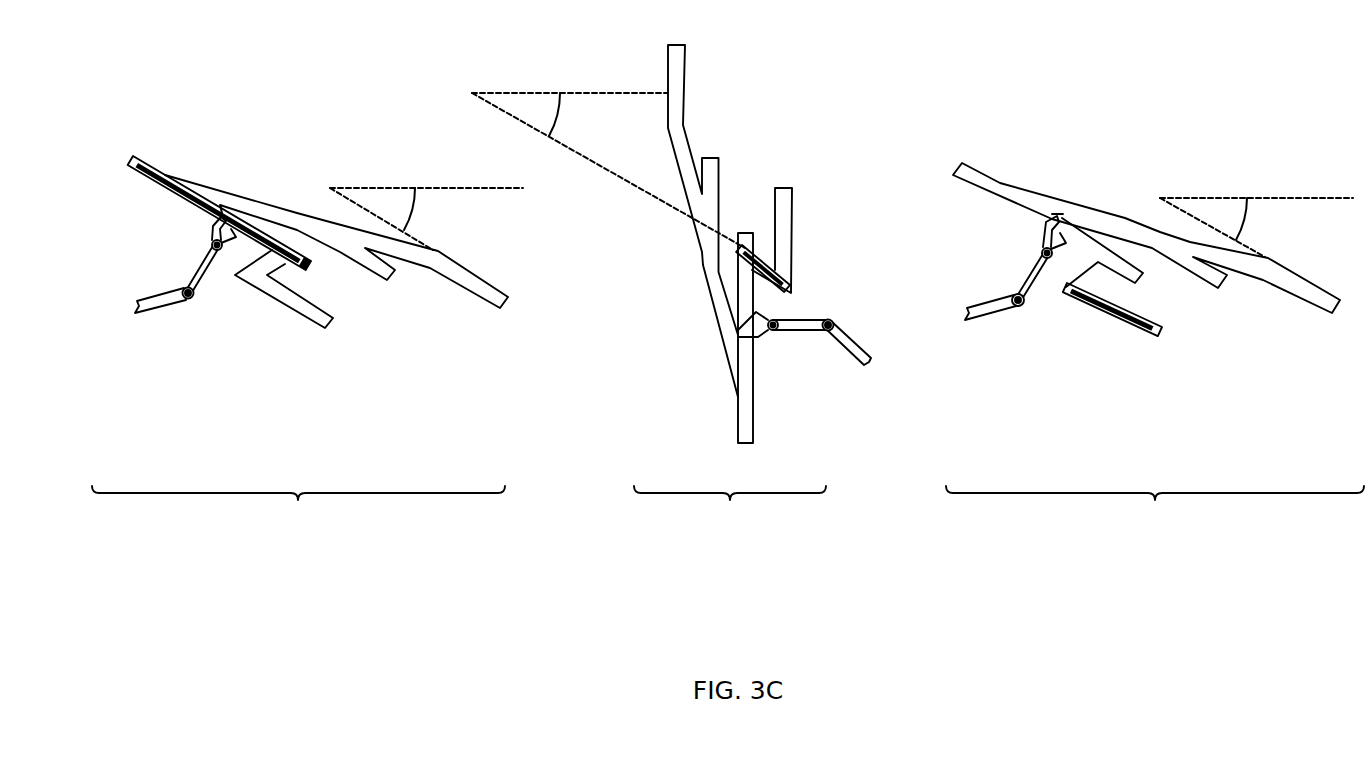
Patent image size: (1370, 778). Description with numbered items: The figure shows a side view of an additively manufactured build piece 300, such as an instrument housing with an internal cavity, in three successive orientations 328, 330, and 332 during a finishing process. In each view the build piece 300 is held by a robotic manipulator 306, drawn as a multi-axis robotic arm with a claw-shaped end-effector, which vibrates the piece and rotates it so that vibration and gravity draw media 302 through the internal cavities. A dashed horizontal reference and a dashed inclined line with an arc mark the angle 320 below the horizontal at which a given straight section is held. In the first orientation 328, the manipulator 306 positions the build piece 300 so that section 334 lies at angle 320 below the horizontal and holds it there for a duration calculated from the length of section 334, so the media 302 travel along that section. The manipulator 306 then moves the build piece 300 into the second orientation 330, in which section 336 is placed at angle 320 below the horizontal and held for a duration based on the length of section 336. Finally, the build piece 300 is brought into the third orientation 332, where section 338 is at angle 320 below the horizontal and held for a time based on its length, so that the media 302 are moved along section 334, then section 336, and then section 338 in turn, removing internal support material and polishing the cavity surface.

The build piece 300 is at (722, 244).
The media 302 is at (731, 276).
The robotic manipulator 306 is at (597, 306).
The angle 320 is at (841, 175).
The orientation 328 is at (298, 508).
The orientation 330 is at (730, 508).
The orientation 332 is at (1155, 508).
The section 334 is at (219, 197).
The section 336 is at (801, 241).
The section 338 is at (1107, 323).